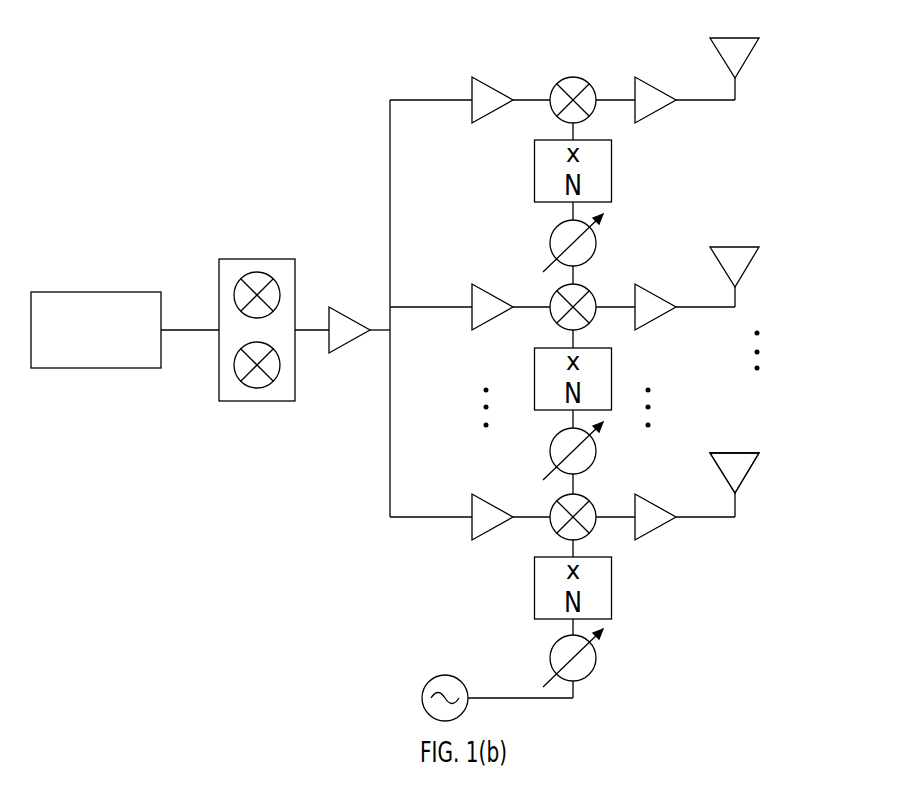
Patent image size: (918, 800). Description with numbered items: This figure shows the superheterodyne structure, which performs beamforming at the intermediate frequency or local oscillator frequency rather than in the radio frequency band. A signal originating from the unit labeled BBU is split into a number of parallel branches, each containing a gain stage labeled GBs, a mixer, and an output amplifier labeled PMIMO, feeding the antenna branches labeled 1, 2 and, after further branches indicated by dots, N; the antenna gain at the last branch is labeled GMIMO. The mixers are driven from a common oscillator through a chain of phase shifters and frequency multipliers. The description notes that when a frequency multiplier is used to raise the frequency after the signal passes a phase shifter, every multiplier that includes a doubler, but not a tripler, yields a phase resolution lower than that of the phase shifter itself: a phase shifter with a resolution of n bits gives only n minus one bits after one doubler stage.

The antenna # 1 is at (740, 54).
The antenna # 2 is at (740, 262).
The antenna # N is at (742, 471).
The baseband unit BBU is at (96, 330).
The gain block amplifier GBs is at (492, 80).
The MIMO power amplifier PMIMO is at (659, 81).
The MIMO antenna gain GMIMO is at (747, 473).